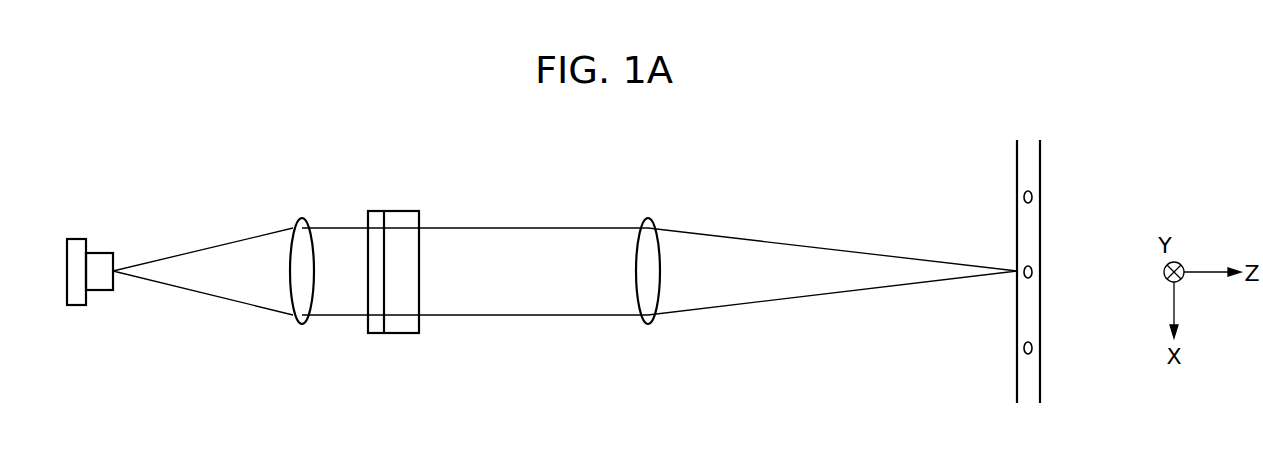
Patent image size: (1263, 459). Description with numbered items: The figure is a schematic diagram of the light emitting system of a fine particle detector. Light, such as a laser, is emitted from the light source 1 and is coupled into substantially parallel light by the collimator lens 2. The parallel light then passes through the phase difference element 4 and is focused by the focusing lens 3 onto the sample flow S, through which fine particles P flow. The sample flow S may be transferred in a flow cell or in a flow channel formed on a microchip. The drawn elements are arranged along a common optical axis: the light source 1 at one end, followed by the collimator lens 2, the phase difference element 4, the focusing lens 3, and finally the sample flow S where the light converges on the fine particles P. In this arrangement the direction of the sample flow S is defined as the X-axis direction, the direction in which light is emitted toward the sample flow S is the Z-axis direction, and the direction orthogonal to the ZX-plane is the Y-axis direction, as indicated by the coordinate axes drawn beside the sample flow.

The light source 1 is at (76, 238).
The collimator lens 2 is at (302, 325).
The focusing lens 3 is at (648, 217).
The phase difference element 4 is at (398, 211).
The sample flow S is at (1017, 160).
The fine particles P is at (1028, 278).